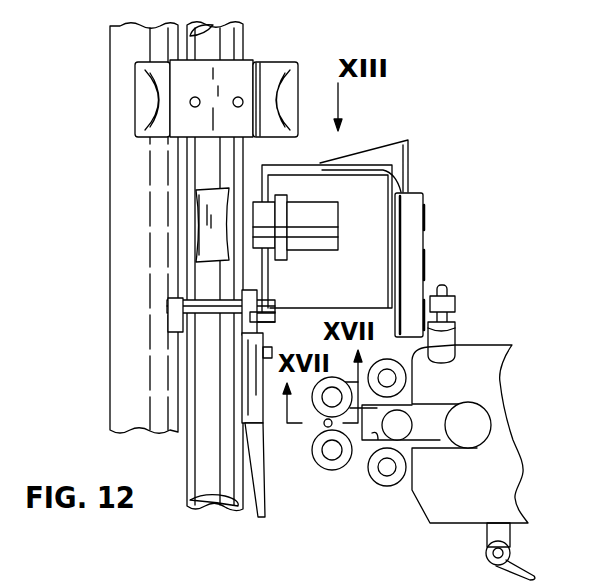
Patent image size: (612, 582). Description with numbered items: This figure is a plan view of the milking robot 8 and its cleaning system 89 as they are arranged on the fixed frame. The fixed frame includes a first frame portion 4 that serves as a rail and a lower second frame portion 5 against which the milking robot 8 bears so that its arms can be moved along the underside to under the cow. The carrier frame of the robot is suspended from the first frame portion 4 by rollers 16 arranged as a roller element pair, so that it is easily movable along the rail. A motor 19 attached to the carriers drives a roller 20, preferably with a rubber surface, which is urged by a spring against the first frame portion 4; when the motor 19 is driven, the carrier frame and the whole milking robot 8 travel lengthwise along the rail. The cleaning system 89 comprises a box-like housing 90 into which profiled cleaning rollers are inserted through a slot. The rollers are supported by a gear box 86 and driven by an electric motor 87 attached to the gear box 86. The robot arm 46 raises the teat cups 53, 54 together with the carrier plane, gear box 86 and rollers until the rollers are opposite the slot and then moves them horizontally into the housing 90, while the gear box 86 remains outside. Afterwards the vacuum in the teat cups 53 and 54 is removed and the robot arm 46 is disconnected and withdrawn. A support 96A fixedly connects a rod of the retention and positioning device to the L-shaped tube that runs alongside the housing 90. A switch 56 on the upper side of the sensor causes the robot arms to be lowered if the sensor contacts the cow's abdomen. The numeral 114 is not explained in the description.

The first frame portion 4 is at (245, 43).
The second frame portion 5 is at (117, 253).
The milking robot 8 is at (518, 398).
The rollers 16 is at (145, 95).
The motor 19 is at (312, 237).
The roller 20 is at (200, 202).
The robot arm 46 is at (508, 505).
The teat cup 53 is at (328, 463).
The teat cup 54 is at (387, 482).
The switch 56 is at (420, 436).
The gear box 86 is at (413, 238).
The electric motor 87 is at (452, 342).
The cleaning system 89 is at (490, 165).
The box-like housing 90 is at (342, 196).
The support 96A is at (392, 140).
The pivot pin 114 is at (323, 423).